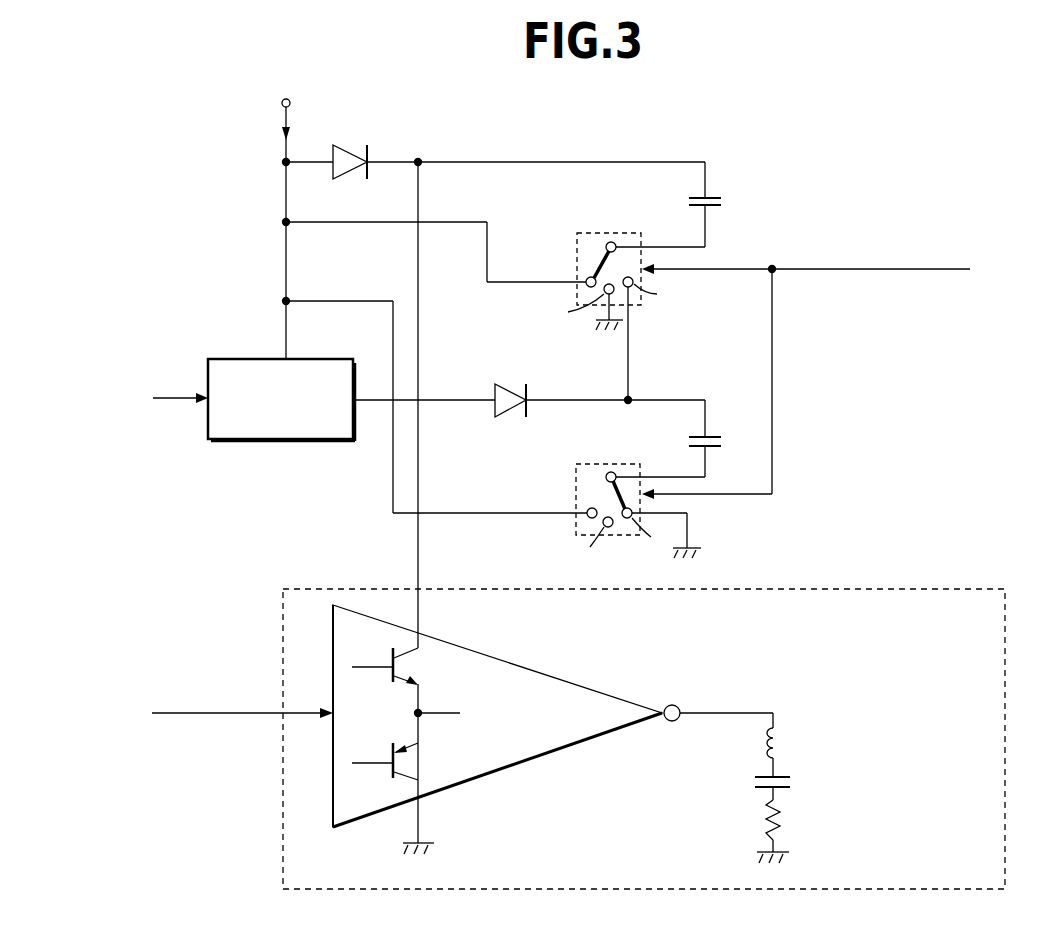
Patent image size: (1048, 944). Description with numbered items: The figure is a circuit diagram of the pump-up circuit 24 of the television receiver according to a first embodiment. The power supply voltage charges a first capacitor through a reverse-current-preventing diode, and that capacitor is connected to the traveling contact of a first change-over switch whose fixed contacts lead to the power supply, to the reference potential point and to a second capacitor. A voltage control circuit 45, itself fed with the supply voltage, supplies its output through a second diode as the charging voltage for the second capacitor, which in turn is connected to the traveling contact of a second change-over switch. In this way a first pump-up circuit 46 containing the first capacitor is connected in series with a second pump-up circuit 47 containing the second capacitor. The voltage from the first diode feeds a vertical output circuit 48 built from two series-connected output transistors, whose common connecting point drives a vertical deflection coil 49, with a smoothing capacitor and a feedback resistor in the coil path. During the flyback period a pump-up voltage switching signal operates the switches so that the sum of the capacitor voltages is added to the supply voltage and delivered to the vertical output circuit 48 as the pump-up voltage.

The pump-up circuit 24 is at (792, 100).
The voltage control circuit 45 is at (293, 439).
The first pump-up circuit 46 is at (628, 203).
The second pump-up circuit 47 is at (680, 408).
The vertical output circuit 48 is at (577, 728).
The vertical deflection coil 49 is at (785, 732).